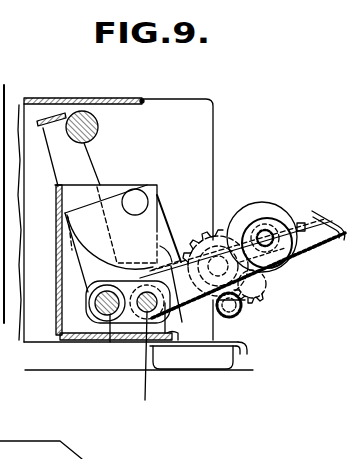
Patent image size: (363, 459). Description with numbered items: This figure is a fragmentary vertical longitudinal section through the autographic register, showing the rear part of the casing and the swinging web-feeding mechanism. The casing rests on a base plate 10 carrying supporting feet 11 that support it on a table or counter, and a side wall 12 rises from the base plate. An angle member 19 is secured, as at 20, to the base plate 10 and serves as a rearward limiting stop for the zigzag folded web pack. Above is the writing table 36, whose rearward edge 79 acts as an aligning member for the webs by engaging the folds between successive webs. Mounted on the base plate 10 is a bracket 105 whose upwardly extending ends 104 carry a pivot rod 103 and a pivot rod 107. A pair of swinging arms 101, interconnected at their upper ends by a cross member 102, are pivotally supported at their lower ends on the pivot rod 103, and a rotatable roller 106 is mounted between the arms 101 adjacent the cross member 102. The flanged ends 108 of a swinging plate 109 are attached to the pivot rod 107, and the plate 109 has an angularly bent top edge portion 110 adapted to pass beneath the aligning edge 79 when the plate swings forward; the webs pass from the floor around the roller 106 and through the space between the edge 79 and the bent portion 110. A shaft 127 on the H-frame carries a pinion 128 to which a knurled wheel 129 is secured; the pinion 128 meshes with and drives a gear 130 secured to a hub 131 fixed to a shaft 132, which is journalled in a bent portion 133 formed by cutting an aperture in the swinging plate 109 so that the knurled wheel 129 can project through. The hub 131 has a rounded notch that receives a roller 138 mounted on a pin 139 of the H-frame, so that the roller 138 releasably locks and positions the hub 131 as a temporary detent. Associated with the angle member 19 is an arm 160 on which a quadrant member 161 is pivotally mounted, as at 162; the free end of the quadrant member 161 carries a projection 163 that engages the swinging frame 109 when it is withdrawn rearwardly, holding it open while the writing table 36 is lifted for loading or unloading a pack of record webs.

The base plate 10 is at (9, 90).
The supporting feet 11 is at (182, 362).
The side wall 12 is at (192, 112).
The angle member 19 is at (56, 252).
The securing point 20 is at (63, 344).
The writing table 36 is at (53, 98).
The rearward edge 79 is at (144, 100).
The swinging arms 101 is at (84, 155).
The cross member 102 is at (43, 118).
The pivot rod 103 is at (108, 342).
The upwardly extending ends 104 is at (88, 314).
The bracket 105 is at (177, 346).
The rotatable roller 106 is at (98, 128).
The pivot rod 107 is at (151, 351).
The flanged ends 108 is at (300, 226).
The swinging plate 109 is at (205, 246).
The angularly bent top edge portion 110 is at (336, 209).
The shaft 127 is at (306, 253).
The pinion 128 is at (264, 201).
The knurled wheel 129 is at (280, 217).
The gear 130 is at (258, 293).
The hub 131 is at (278, 289).
The shaft 132 is at (214, 230).
The bent portion 133 is at (300, 222).
The roller 138 is at (236, 314).
The pin 139 is at (241, 306).
The arm 160 is at (107, 190).
The quadrant member 161 is at (150, 224).
The pivot 162 is at (138, 191).
The projection 163 is at (156, 254).